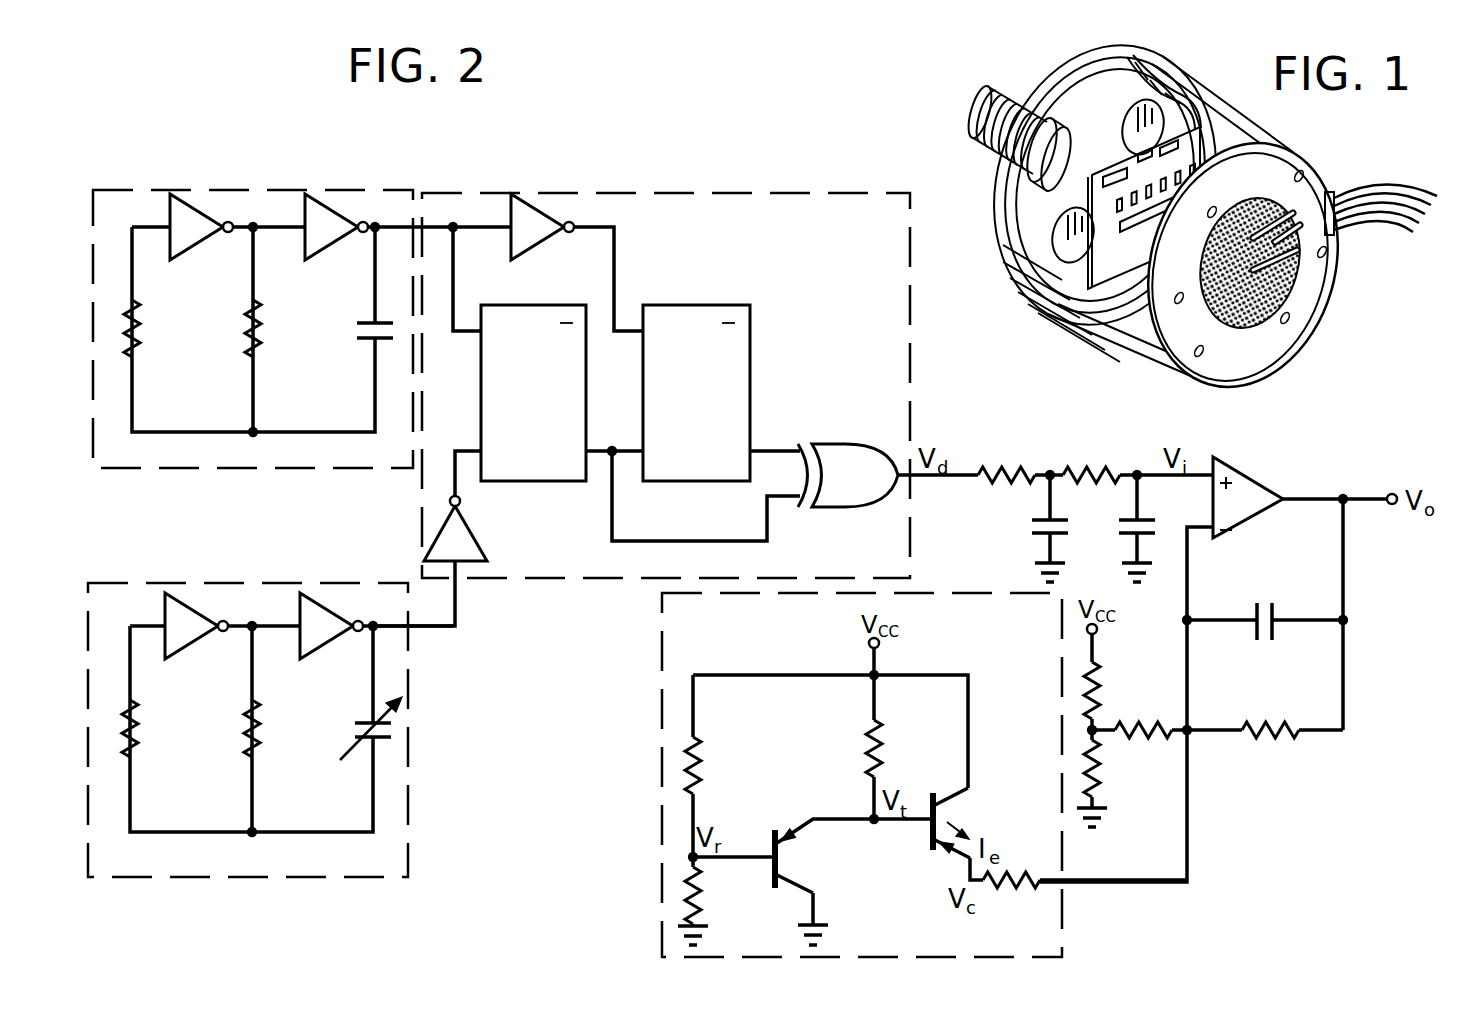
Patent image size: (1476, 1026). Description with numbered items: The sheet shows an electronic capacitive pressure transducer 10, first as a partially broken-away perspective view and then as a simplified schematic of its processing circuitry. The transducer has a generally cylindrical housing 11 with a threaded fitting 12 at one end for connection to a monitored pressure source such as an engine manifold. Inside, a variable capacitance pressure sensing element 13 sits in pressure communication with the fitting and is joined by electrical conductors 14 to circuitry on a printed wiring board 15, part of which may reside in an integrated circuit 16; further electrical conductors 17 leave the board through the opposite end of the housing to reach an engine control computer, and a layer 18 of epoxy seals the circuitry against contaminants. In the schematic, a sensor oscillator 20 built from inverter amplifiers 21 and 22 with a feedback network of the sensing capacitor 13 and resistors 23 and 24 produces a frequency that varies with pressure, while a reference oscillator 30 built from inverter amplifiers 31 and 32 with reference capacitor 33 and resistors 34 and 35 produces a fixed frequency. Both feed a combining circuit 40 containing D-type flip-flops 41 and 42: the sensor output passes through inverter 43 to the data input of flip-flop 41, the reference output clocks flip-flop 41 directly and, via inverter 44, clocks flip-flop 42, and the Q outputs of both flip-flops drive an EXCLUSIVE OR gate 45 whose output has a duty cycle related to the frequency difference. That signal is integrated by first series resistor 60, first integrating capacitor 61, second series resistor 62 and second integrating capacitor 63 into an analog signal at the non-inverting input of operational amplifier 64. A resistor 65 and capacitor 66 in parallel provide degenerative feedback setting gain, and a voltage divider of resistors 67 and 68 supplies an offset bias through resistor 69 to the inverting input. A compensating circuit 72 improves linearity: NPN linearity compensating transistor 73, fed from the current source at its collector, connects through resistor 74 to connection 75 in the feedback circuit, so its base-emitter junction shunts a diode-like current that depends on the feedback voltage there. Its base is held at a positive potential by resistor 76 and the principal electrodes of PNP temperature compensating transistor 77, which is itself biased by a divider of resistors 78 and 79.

In FIG. 1, the electronic capacitive pressure transducer 10 is at (1086, 350).
In FIG. 1, the housing 11 is at (1283, 118).
In FIG. 1, the threaded fitting 12 is at (988, 145).
In FIG. 2, the variable capacitance pressure sensing element 13 is at (350, 733).
In FIG. 1, the variable capacitance pressure sensing element 13 is at (1068, 243).
In FIG. 1, the electrical conductors 14 is at (1198, 100).
In FIG. 1, the printed wiring board 15 is at (1104, 207).
In FIG. 1, the integrated circuit 16 is at (1078, 284).
In FIG. 1, the electrical conductors 17 is at (1125, 315).
In FIG. 1, the layer of epoxy 18 is at (1268, 286).
In FIG. 2, the sensor oscillator 20 is at (262, 583).
In FIG. 2, the inverter amplifier 21 is at (206, 644).
In FIG. 2, the inverter amplifier 22 is at (341, 644).
In FIG. 2, the resistor 23 is at (136, 728).
In FIG. 2, the resistor 24 is at (258, 728).
In FIG. 2, the reference oscillator 30 is at (216, 191).
In FIG. 2, the inverter amplifier 31 is at (213, 223).
In FIG. 2, the inverter amplifier 32 is at (350, 223).
In FIG. 2, the reference capacitor 33 is at (358, 338).
In FIG. 2, the resistor 34 is at (138, 326).
In FIG. 2, the resistor 35 is at (259, 326).
In FIG. 2, the combining circuit 40 is at (612, 193).
In FIG. 2, the D-type flip-flop 41 is at (534, 305).
In FIG. 2, the D-type flip-flop 42 is at (688, 305).
In FIG. 2, the inverter 43 is at (476, 534).
In FIG. 2, the inverter 44 is at (560, 222).
In FIG. 2, the EXCLUSIVE OR gate 45 is at (862, 507).
In FIG. 2, the first series resistor 60 is at (1004, 474).
In FIG. 2, the first integrating capacitor 61 is at (1030, 523).
In FIG. 2, the second series resistor 62 is at (1094, 474).
In FIG. 2, the second integrating capacitor 63 is at (1157, 533).
In FIG. 2, the operational amplifier 64 is at (1255, 483).
In FIG. 2, the resistor 65 is at (1268, 740).
In FIG. 2, the capacitor 66 is at (1274, 630).
In FIG. 2, the resistor 67 is at (1098, 690).
In FIG. 2, the resistor 68 is at (1098, 773).
In FIG. 2, the resistor 69 is at (1138, 726).
In FIG. 2, the compensating circuit 72 is at (661, 651).
In FIG. 2, the linearity compensating transistor 73 is at (928, 830).
In FIG. 2, the resistor 74 is at (1010, 893).
In FIG. 2, the connection 75 is at (1190, 736).
In FIG. 2, the resistor 76 is at (880, 748).
In FIG. 2, the temperature compensating transistor 77 is at (771, 870).
In FIG. 2, the resistor 78 is at (699, 768).
In FIG. 2, the resistor 79 is at (699, 893).